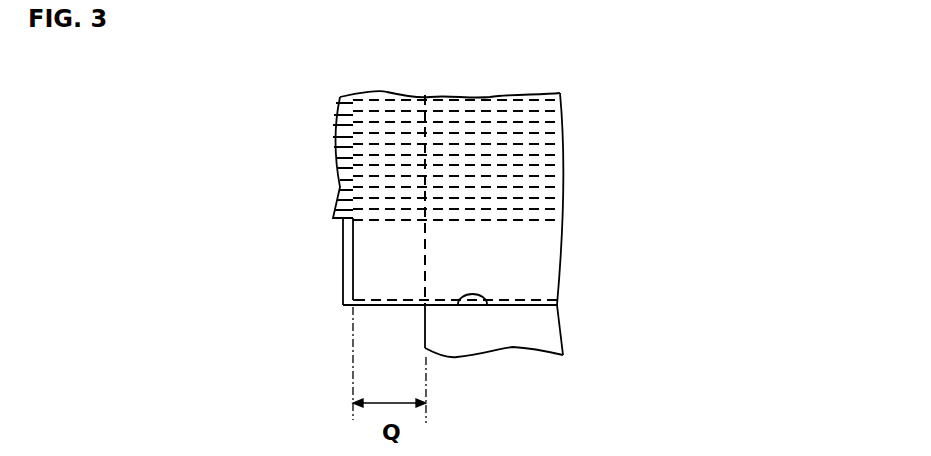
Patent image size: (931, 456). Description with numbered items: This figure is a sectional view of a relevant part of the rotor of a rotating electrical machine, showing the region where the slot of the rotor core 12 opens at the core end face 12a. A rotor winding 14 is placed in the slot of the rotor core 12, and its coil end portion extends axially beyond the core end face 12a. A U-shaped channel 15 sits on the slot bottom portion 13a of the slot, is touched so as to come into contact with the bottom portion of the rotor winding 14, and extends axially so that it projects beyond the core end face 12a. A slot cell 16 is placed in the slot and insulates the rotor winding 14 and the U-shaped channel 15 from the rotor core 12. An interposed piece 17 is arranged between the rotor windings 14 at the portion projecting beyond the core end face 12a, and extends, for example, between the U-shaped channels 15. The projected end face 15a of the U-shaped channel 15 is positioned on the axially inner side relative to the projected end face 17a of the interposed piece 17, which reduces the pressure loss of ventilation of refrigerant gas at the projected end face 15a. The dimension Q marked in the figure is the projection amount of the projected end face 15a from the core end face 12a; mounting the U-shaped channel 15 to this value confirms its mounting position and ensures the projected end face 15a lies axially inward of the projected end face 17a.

The rotor core 12 is at (533, 323).
The core end face 12a is at (425, 333).
The slot bottom portion 13a is at (487, 304).
The rotor winding 14 is at (340, 117).
The U-shaped channel 15 is at (372, 304).
The projected end face 15a is at (342, 268).
The slot cell 16 is at (462, 240).
The interposed piece 17 is at (342, 237).
The projected end face 17a is at (342, 250).